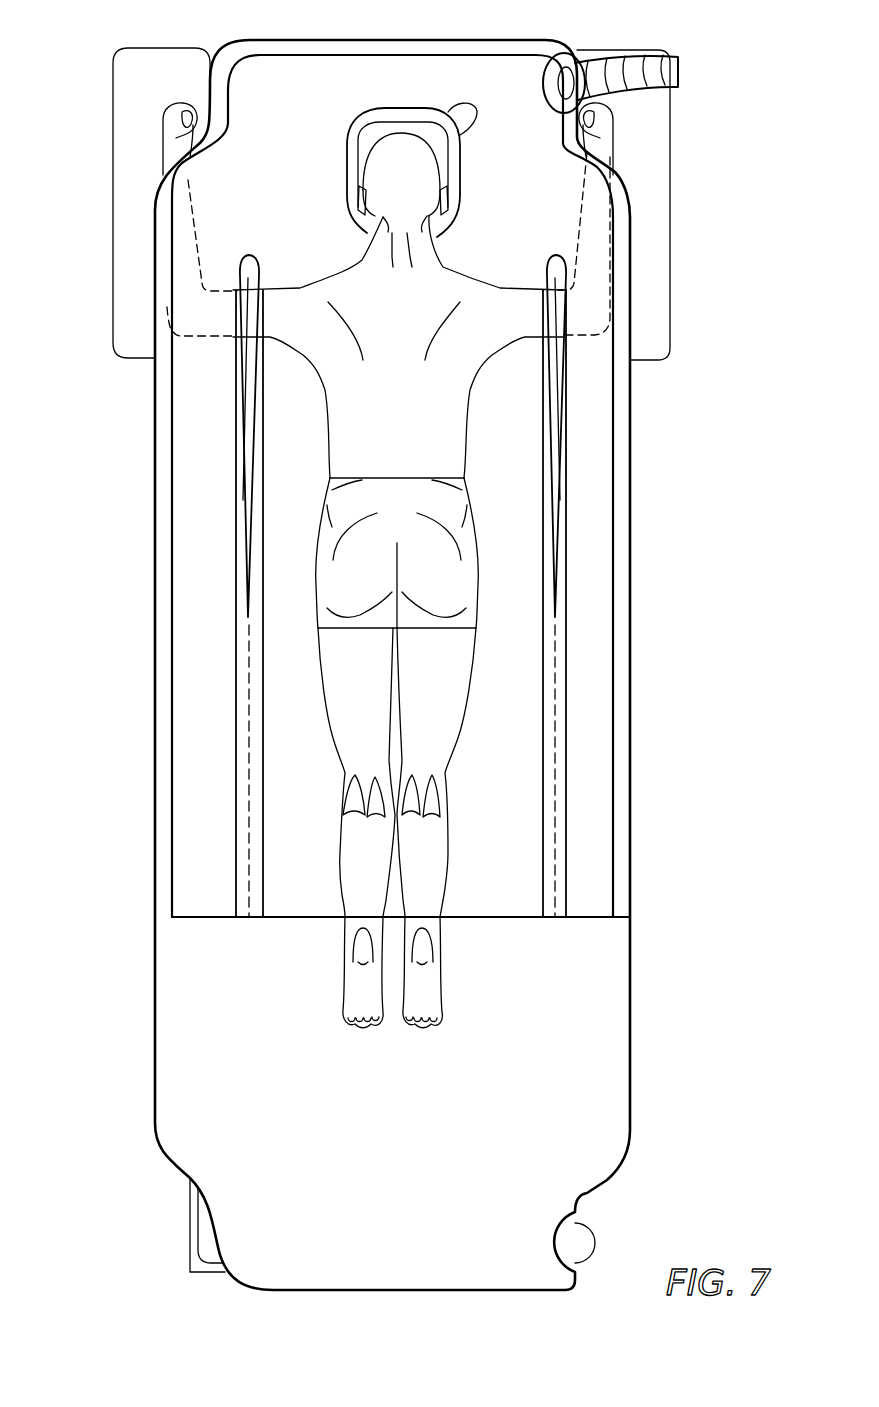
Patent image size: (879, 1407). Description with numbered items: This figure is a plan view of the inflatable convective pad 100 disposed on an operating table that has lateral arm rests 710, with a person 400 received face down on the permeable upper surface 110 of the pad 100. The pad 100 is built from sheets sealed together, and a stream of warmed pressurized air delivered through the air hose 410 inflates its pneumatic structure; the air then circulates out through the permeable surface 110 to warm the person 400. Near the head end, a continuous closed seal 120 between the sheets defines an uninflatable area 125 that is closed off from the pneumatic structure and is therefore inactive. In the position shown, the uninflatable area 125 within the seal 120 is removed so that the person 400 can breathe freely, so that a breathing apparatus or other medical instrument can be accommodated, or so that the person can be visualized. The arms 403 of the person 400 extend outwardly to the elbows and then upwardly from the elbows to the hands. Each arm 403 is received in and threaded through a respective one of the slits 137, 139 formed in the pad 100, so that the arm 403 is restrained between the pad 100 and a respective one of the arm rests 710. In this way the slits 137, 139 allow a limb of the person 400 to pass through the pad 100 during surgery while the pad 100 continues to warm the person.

The inflatable convective pad 100 is at (660, 688).
The upper surface 110 is at (502, 893).
The seal 120 is at (364, 109).
The uninflatable area 125 is at (400, 153).
The slit 137 is at (248, 403).
The slit 139 is at (555, 415).
The person 400 is at (470, 250).
The arms 403 is at (267, 303).
The air hose 410 is at (677, 92).
The lateral arm rests 710 is at (127, 93).